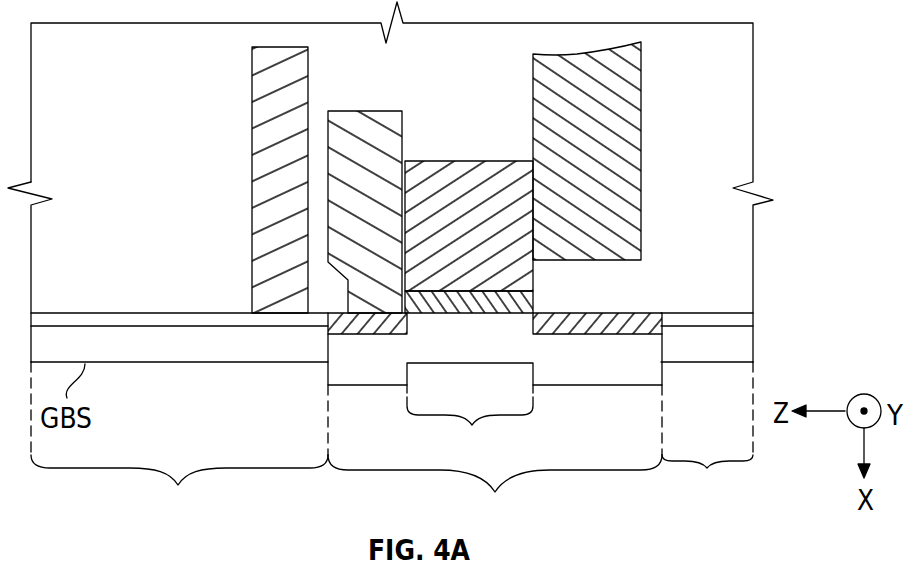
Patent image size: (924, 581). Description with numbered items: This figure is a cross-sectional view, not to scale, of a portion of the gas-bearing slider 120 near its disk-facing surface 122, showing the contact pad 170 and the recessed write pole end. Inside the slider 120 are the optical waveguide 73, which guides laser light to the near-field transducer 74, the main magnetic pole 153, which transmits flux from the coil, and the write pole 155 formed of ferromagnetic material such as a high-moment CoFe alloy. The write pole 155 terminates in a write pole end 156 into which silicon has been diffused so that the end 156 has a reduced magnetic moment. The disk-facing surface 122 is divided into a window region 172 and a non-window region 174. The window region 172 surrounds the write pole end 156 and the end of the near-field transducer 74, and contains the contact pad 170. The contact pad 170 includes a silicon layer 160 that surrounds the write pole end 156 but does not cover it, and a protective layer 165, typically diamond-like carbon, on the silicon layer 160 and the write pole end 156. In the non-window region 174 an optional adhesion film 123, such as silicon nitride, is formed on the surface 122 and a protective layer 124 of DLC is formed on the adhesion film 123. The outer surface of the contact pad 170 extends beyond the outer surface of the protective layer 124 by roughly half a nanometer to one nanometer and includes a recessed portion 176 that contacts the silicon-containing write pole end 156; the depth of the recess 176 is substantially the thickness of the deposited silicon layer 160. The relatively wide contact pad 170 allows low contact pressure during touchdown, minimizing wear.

The optical waveguide 73 is at (298, 93).
The near-field transducer 74 is at (328, 228).
The gas-bearing slider 120 is at (740, 112).
The disk-facing surface 122 is at (725, 312).
The adhesion film 123 is at (743, 324).
The protective layer 124 is at (742, 350).
The main magnetic pole 153 is at (541, 102).
The write pole 155 is at (428, 165).
The write pole end 156 is at (522, 303).
The silicon layer 160 is at (655, 318).
The protective layer 165 is at (587, 358).
The contact pad 170 is at (358, 388).
The window region 172 is at (495, 493).
The non-window region 174 is at (392, 491).
The recessed portion 176 is at (470, 411).